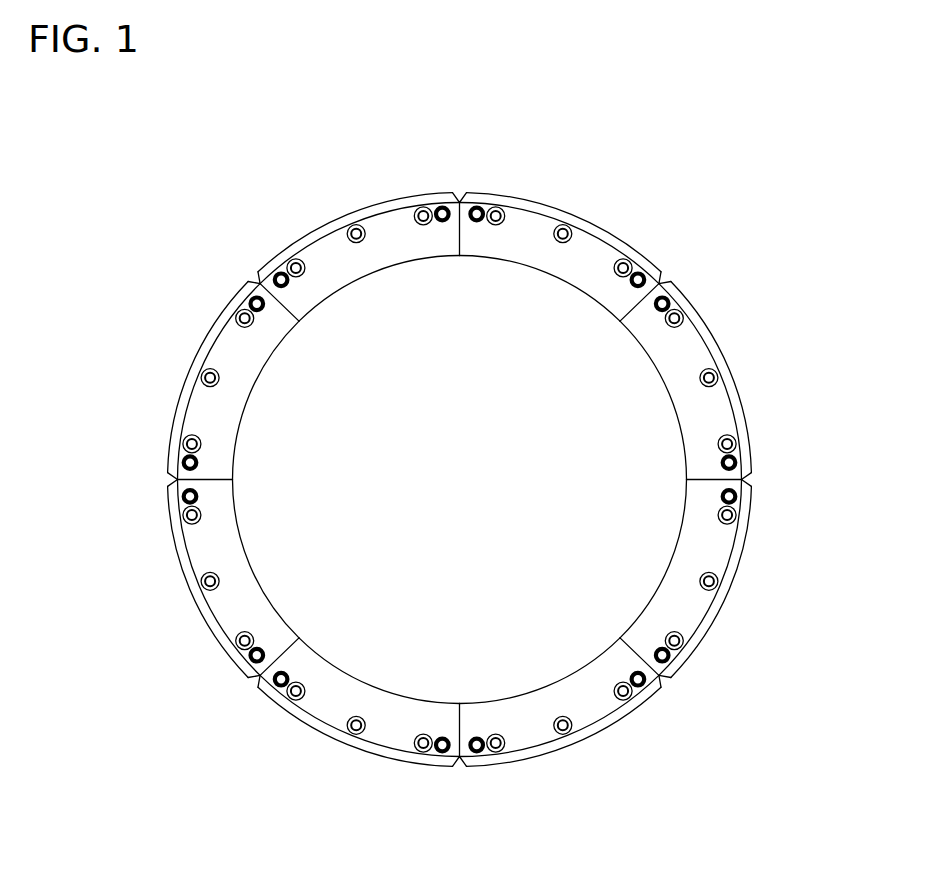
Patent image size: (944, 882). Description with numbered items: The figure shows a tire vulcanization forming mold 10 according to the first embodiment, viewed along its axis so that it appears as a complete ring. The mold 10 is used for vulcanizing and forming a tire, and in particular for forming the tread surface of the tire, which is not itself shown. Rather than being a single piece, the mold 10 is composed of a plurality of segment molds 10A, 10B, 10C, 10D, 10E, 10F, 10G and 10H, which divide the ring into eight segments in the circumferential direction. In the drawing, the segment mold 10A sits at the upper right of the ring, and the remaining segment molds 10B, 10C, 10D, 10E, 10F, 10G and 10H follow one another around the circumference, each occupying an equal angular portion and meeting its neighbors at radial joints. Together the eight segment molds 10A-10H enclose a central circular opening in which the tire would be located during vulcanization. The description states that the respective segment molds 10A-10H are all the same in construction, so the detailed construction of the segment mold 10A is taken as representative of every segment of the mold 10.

The mold 10 is at (510, 177).
The segment mold 10A is at (582, 240).
The segment mold 10B is at (717, 393).
The segment mold 10C is at (703, 605).
The segment mold 10D is at (585, 718).
The segment mold 10E is at (332, 720).
The segment mold 10F is at (212, 602).
The segment mold 10G is at (213, 357).
The segment mold 10H is at (330, 243).